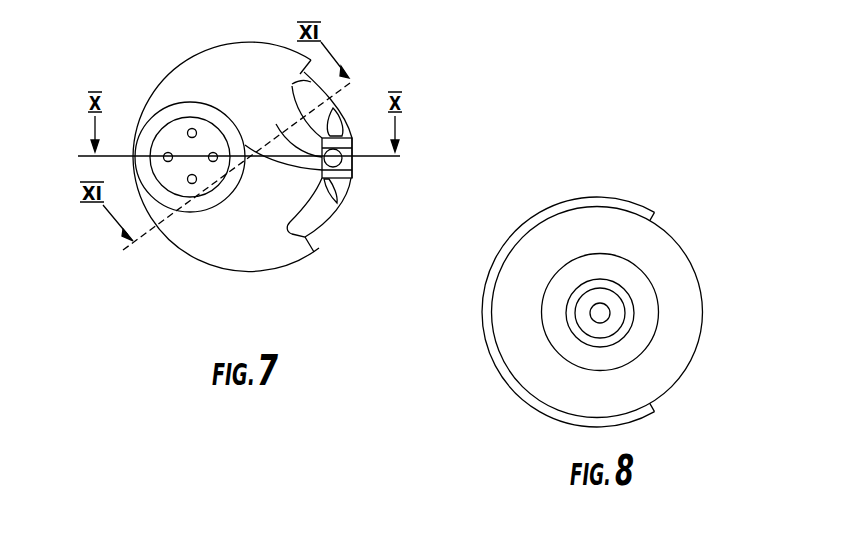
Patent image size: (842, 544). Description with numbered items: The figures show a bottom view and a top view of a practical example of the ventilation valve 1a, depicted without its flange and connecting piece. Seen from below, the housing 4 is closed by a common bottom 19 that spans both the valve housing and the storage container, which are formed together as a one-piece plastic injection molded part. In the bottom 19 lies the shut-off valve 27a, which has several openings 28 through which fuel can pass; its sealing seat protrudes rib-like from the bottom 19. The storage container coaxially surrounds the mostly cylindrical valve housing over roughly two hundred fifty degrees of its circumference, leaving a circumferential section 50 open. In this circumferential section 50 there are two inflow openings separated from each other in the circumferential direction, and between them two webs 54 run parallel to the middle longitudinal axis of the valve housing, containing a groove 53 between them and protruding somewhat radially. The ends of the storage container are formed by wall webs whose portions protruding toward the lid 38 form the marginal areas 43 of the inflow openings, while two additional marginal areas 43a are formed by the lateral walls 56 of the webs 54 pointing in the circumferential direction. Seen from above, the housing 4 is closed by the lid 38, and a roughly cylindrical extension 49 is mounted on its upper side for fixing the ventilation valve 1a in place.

In FIG. 7, the ventilation valve 1a is at (142, 311).
In FIG. 8, the ventilation valve 1a is at (484, 373).
In FIG. 8, the housing 4 is at (689, 252).
In FIG. 7, the bottom 19 is at (270, 253).
In FIG. 7, the shut-off valve 27a is at (209, 208).
In FIG. 7, the openings 28 is at (215, 152).
In FIG. 8, the lid 38 is at (672, 292).
In FIG. 7, the marginal areas 43 is at (311, 58).
In FIG. 7, the additional marginal areas 43a is at (334, 112).
In FIG. 8, the cylindrical extension 49 is at (633, 345).
In FIG. 7, the circumferential section 50 is at (331, 181).
In FIG. 7, the groove 53 is at (352, 149).
In FIG. 7, the webs 54 is at (284, 137).
In FIG. 7, the lateral walls 56 is at (352, 137).